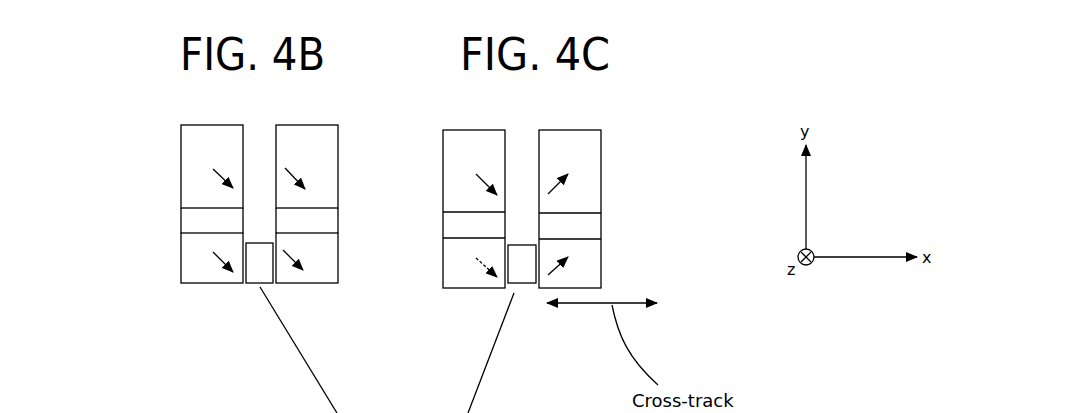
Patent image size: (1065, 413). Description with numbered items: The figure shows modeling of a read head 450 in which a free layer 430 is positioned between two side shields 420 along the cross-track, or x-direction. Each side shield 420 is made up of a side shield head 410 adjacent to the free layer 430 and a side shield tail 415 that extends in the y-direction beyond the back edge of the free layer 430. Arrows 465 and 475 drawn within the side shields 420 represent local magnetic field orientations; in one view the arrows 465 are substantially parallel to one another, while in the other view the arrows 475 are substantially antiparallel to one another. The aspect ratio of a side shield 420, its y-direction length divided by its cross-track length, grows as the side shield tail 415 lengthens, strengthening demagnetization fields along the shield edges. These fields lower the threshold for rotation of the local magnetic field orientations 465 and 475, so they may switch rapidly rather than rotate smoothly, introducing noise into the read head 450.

In FIG. 4B, the write head assembly 450 is at (82, 102).
In FIG. 4B, the side shield 420 is at (125, 183).
In FIG. 4B, the side shield tail 415 is at (197, 190).
In FIG. 4B, the side shield head 410 is at (192, 257).
In FIG. 4B, the arrows representing local magnetic field orientations 465 is at (220, 172).
In FIG. 4B, the free layer 430 is at (260, 272).
In FIG. 4C, the arrows representing local magnetic field orientations 475 is at (482, 185).